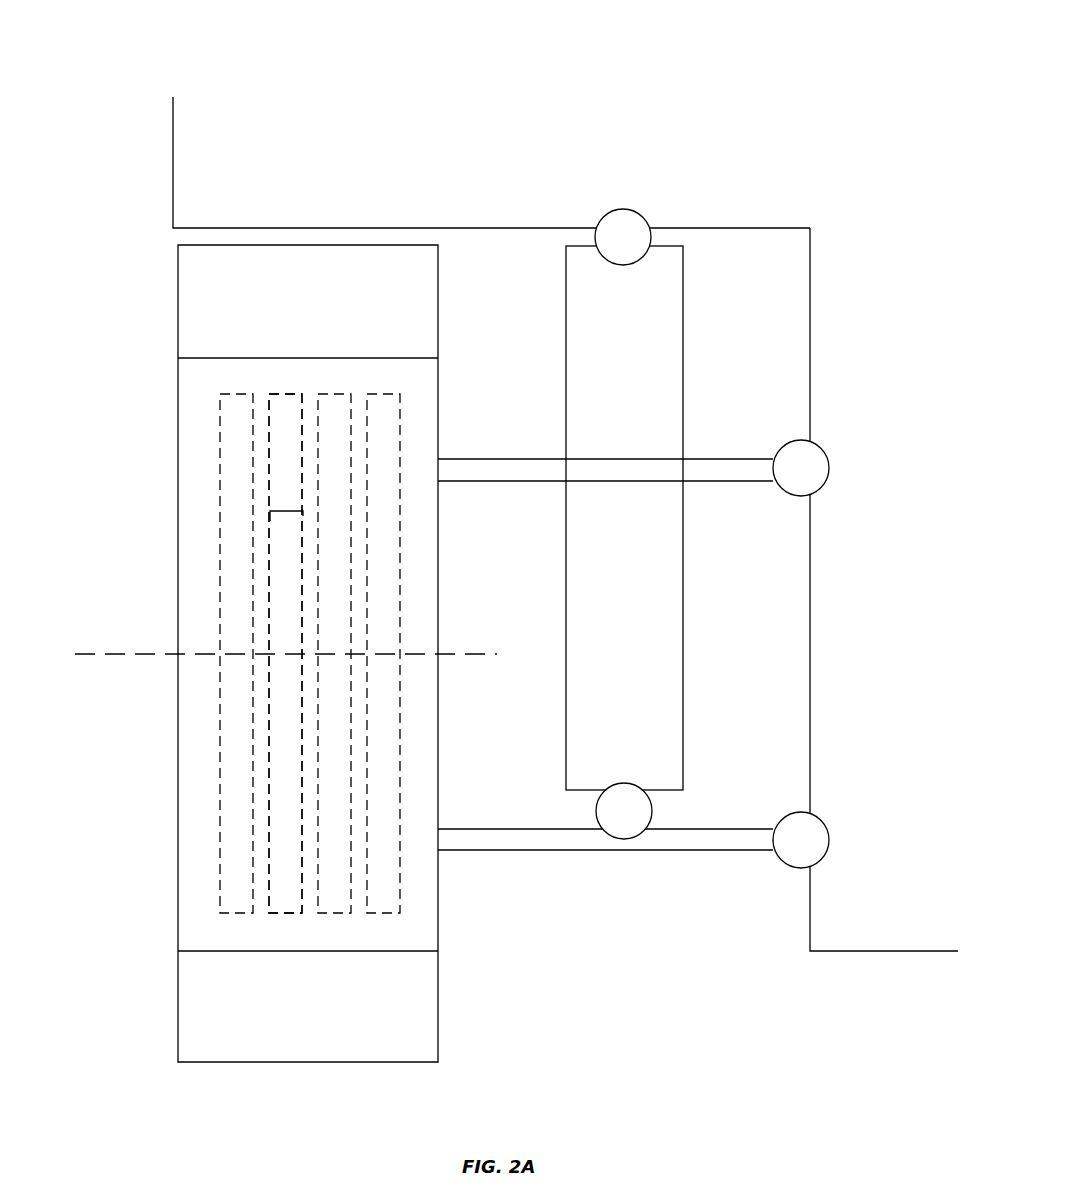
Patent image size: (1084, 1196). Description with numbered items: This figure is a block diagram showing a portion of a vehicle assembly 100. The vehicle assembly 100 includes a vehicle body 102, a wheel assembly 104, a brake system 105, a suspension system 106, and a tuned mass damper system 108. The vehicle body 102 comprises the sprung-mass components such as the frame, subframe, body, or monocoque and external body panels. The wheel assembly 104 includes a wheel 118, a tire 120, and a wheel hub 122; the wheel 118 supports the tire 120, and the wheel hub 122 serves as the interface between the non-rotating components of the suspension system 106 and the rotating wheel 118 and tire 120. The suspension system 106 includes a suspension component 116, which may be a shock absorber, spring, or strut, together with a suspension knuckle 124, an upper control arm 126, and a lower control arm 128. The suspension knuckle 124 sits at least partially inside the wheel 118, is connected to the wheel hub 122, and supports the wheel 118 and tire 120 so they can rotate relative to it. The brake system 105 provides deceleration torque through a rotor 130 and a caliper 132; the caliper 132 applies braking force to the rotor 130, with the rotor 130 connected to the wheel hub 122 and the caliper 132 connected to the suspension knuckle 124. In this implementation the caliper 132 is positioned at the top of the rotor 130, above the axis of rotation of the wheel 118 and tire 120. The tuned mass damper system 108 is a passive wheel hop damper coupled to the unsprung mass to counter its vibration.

The vehicle assembly 100 is at (112, 66).
The vehicle body 102 is at (173, 190).
The wheel assembly 104 is at (122, 333).
The suspension system 106 is at (850, 314).
The suspension component 116 is at (683, 590).
The wheel 118 is at (178, 937).
The tire 120 is at (178, 1018).
The wheel hub 122 is at (220, 470).
The suspension knuckle 124 is at (370, 750).
The upper control arm 126 is at (497, 459).
The lower control arm 128 is at (731, 829).
The rotor 130 is at (268, 562).
The caliper 132 is at (270, 430).
The brake system 105 is at (262, 523).
The tuned mass damper system 108 is at (318, 638).